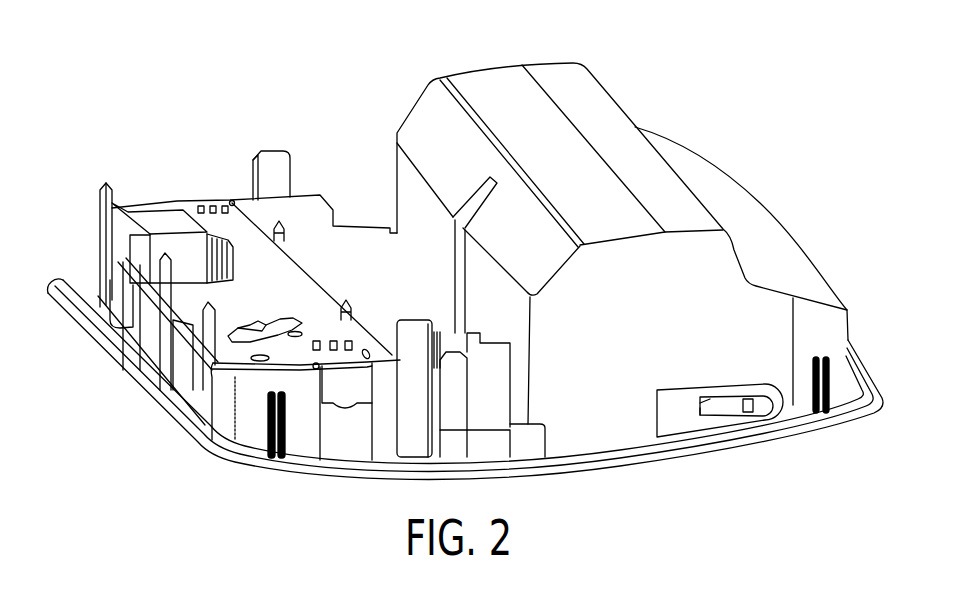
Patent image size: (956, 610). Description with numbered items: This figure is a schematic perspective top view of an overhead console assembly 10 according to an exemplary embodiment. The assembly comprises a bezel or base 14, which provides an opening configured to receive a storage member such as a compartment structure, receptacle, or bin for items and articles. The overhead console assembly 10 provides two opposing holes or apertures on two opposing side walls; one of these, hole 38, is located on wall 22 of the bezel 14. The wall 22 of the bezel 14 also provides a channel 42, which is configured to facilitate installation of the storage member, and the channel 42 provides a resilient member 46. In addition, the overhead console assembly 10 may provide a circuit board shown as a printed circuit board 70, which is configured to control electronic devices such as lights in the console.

The overhead console assembly 10 is at (355, 117).
The bezel/base 14 is at (488, 78).
The wall 22 is at (577, 483).
The hole 38 is at (763, 404).
The channel 42 is at (737, 412).
The resilient member 46 is at (713, 408).
The printed circuit board 70 is at (233, 202).